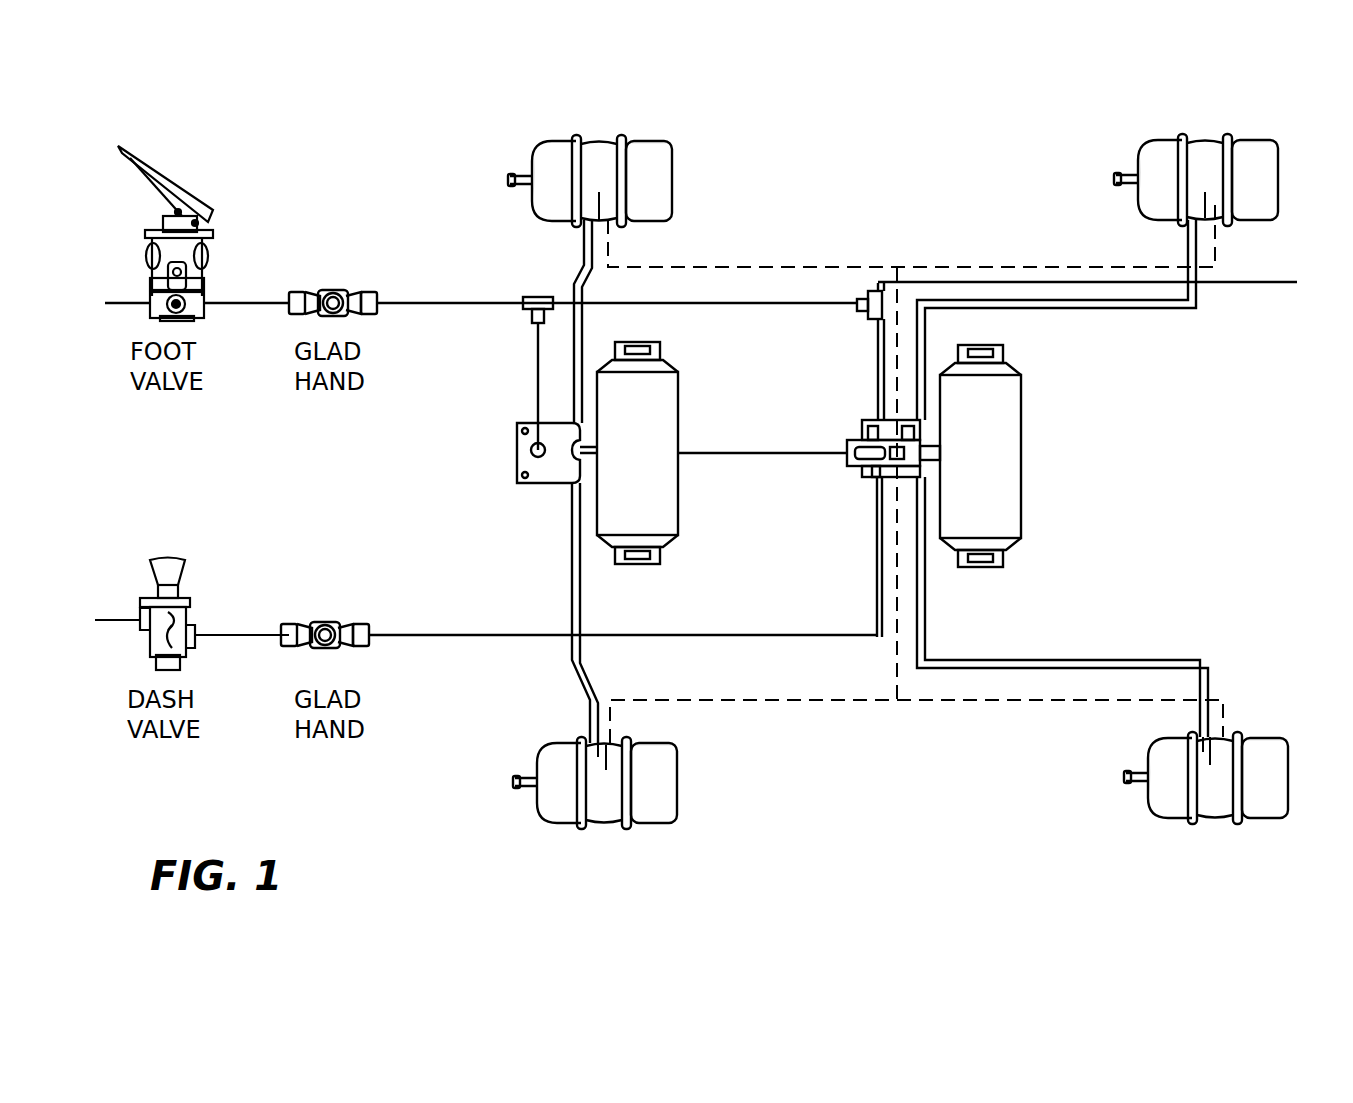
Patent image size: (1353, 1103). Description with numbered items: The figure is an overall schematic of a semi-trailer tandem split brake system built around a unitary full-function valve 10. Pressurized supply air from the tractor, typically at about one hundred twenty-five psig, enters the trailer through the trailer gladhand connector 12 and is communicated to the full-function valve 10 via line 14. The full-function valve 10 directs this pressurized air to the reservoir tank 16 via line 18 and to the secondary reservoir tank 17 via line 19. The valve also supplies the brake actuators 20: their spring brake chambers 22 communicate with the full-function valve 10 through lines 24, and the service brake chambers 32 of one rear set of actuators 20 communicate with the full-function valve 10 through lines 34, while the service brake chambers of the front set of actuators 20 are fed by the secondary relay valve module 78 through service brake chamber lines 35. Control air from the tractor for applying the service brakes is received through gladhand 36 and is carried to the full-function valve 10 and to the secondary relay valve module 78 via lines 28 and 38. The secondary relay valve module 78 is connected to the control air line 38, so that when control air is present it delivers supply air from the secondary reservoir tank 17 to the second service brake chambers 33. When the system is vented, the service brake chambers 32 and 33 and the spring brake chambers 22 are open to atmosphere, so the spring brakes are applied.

The full-function valve 10 is at (850, 432).
The trailer gladhand connector 12 is at (325, 620).
The line 14 is at (774, 632).
The reservoir tank 16 is at (1003, 458).
The secondary reservoir tank 17 is at (652, 412).
The line 18 is at (928, 448).
The line 19 is at (754, 446).
The brake actuators 20 is at (596, 142).
The spring brake chambers 22 is at (660, 180).
The lines 24 is at (875, 347).
The line 28 is at (752, 306).
The service brake chambers 32 is at (1158, 205).
The second service brake chambers 33 is at (553, 148).
The lines 34 is at (992, 306).
The service brake chamber lines 35 is at (572, 272).
The gladhand 36 is at (333, 290).
The line 38 is at (538, 372).
The secondary relay valve module 78 is at (517, 447).